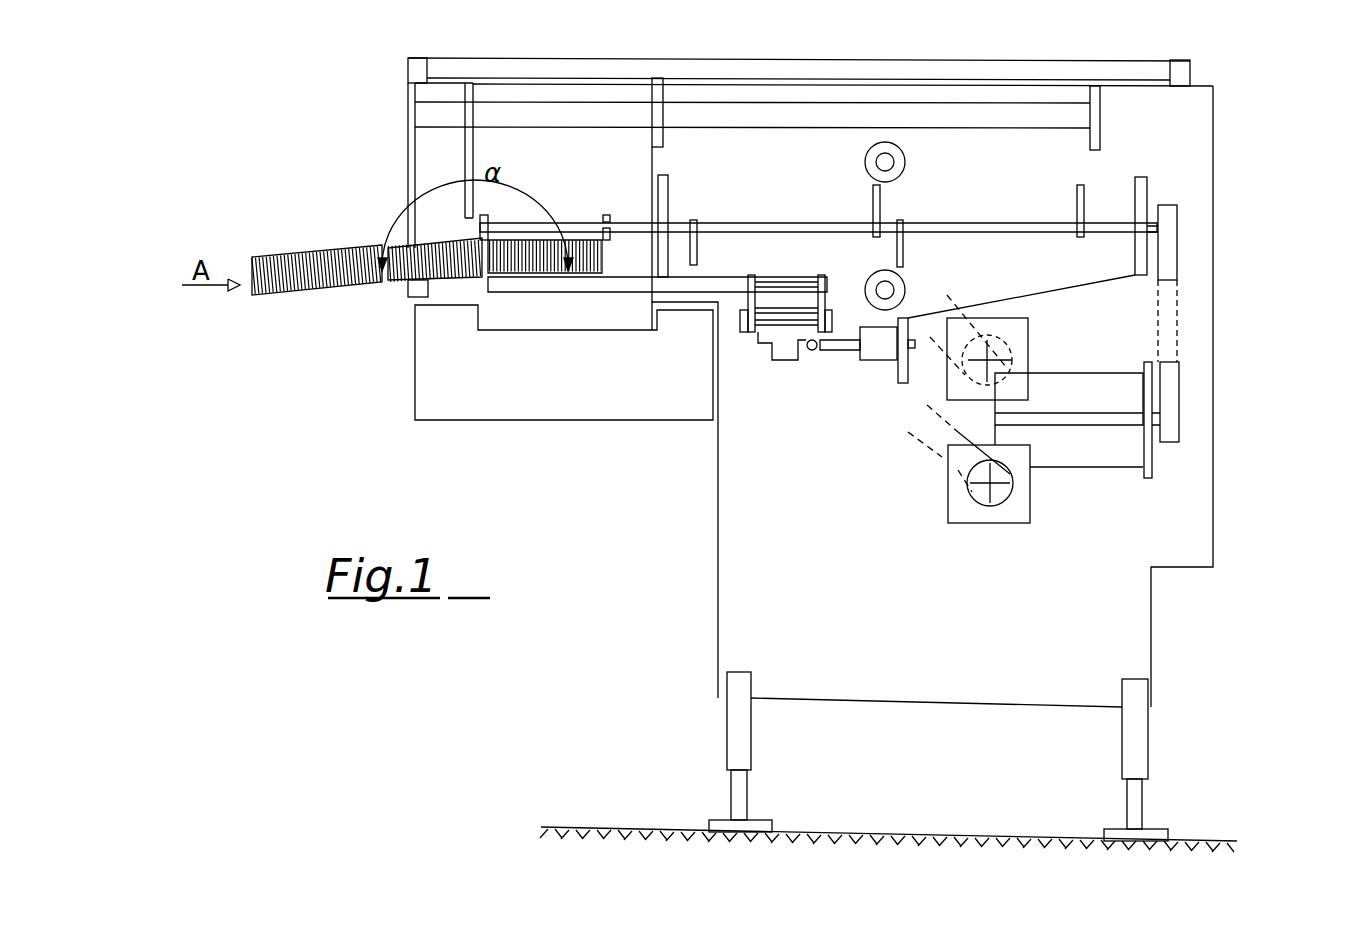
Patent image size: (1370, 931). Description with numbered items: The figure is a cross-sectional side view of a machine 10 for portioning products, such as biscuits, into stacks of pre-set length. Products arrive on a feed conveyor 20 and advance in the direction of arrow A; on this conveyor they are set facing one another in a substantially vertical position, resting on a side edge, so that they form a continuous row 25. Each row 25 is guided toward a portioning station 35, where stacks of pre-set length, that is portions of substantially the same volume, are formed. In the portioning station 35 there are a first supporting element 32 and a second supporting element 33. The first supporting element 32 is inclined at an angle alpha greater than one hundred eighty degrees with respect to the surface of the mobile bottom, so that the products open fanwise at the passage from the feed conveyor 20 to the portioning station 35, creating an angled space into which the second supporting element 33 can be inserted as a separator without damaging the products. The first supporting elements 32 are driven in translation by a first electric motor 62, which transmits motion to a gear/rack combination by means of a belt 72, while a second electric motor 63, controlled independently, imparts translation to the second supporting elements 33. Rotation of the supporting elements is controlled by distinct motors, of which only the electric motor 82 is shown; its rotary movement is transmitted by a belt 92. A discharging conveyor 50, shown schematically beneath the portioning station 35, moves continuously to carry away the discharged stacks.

The machine 10 is at (1232, 461).
The feed conveyor 20 is at (297, 293).
The row 25 is at (307, 260).
The first supporting element 32 is at (477, 252).
The second supporting element 33 is at (607, 245).
The portioning station 35 is at (570, 205).
The discharging conveyor 50 is at (487, 412).
The first electric motor 62 is at (968, 513).
The second electric motor 63 is at (1020, 333).
The belt 72 is at (943, 472).
The electric motor 82 is at (1113, 460).
The belt 92 is at (1169, 239).